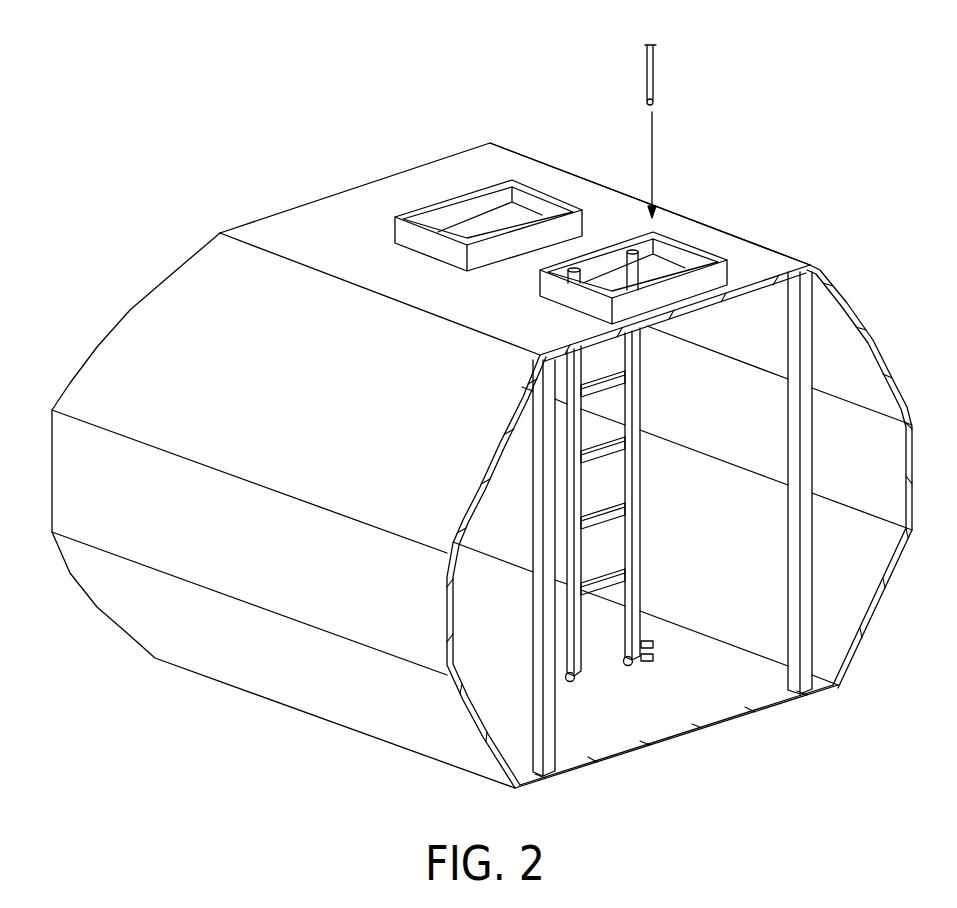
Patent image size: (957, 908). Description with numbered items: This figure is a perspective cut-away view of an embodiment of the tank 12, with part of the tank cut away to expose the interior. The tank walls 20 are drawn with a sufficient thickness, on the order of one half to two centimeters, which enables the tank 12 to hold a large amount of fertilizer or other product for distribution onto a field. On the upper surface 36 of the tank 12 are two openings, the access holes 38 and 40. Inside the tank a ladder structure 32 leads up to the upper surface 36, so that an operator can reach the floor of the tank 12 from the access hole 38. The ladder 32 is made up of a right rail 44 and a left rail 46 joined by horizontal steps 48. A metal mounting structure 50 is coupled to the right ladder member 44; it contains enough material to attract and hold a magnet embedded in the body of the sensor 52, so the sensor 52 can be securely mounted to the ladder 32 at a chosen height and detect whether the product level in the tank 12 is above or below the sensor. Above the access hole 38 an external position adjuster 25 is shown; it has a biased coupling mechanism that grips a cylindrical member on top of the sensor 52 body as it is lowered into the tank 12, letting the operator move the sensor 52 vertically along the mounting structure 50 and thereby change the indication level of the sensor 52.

The tank 12 is at (137, 228).
The tank walls 20 is at (302, 694).
The external position adjuster 25 is at (658, 78).
The ladder structure 32 is at (646, 522).
The upper surface 36 is at (498, 160).
The access hole 38 is at (662, 260).
The access hole 40 is at (483, 231).
The right rail 44 is at (633, 534).
The left rail 46 is at (584, 640).
The horizontal steps 48 is at (600, 393).
The mounting structure 50 is at (655, 648).
The sensor 52 is at (648, 659).